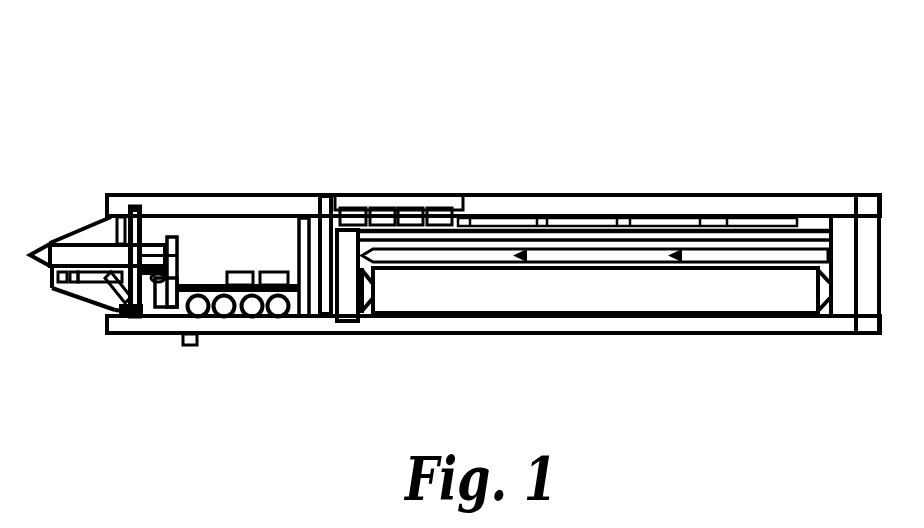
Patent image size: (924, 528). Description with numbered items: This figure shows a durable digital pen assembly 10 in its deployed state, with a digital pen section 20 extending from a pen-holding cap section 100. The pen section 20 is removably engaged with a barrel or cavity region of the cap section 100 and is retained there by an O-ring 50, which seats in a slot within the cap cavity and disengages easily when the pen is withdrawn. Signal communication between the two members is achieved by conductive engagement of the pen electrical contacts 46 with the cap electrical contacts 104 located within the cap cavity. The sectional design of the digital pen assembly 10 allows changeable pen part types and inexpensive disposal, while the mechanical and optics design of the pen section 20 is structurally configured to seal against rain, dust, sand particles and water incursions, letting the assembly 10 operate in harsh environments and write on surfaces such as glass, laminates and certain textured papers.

The durable digital pen assembly 10 is at (101, 94).
The digital pen section 20 is at (231, 241).
The pen electrical contacts 46 is at (285, 320).
The O-ring 50 is at (136, 318).
The pen-holding cap section 100 is at (590, 205).
The cap electrical contacts 104 is at (252, 320).